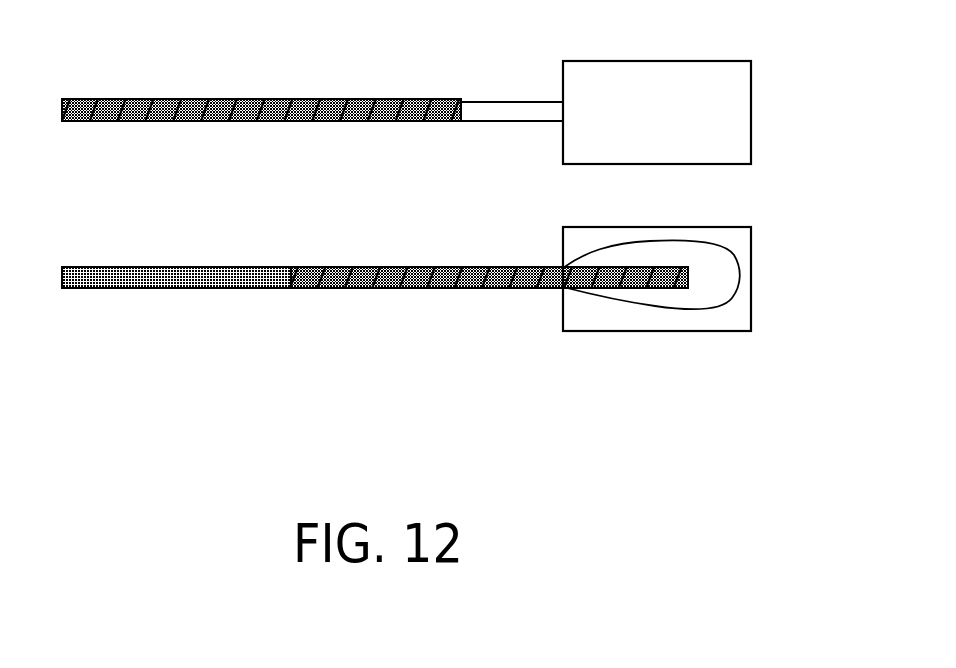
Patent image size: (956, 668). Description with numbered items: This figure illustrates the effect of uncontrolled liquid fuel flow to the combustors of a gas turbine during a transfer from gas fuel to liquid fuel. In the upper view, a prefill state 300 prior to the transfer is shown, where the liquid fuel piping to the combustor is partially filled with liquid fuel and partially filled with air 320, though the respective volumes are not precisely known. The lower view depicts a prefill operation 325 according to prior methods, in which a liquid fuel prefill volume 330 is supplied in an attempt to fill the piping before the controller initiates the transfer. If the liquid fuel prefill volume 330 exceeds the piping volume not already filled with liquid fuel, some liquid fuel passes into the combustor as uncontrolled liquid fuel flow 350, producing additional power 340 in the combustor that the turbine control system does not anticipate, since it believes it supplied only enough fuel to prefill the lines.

The prefill state 300 is at (468, 26).
The air 320 is at (482, 100).
The prefill operation 325 is at (348, 185).
The liquid fuel prefill volume 330 is at (148, 267).
The additional power 340 is at (708, 248).
The uncontrolled liquid fuel flow 350 is at (623, 288).